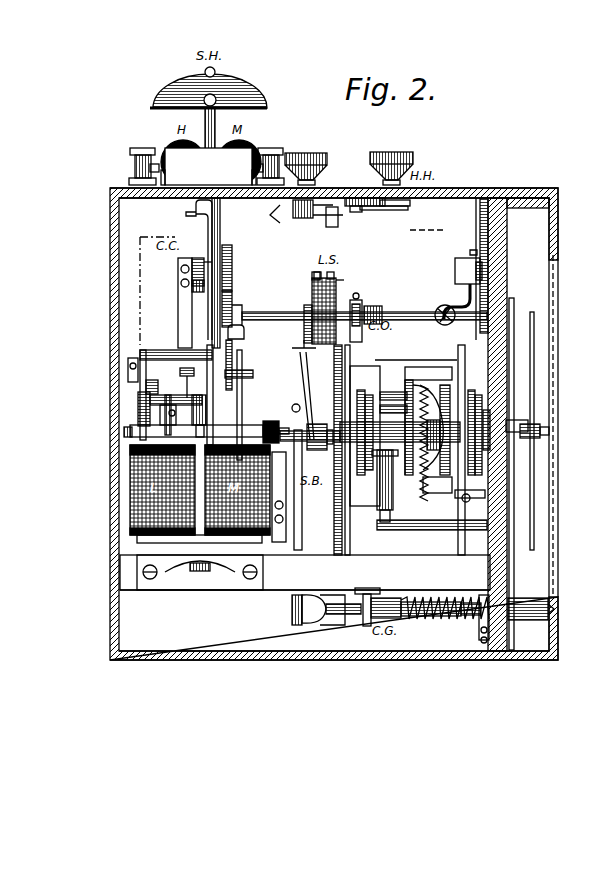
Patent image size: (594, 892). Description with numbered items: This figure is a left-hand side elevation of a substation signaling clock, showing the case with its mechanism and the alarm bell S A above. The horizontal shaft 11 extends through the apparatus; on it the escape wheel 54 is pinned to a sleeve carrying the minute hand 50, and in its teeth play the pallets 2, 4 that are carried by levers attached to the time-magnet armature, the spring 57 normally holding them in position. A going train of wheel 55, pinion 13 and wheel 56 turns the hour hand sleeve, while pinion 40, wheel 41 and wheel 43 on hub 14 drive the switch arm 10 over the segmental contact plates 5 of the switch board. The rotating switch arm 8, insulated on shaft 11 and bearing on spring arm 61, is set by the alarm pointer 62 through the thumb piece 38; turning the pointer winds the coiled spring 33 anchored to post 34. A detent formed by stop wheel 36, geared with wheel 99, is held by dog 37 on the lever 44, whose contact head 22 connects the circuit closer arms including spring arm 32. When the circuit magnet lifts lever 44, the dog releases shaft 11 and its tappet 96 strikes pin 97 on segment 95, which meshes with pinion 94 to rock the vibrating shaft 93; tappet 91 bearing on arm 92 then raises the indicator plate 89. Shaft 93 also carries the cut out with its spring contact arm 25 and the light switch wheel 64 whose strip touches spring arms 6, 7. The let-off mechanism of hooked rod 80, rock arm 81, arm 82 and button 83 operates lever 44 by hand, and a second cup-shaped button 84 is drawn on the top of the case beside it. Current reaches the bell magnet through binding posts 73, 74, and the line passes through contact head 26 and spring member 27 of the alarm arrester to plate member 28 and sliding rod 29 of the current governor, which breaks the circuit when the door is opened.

The pallet 2 is at (440, 386).
The pallet 4 is at (140, 700).
The segmental metal contact plate 5 is at (475, 700).
The spring arm 6 is at (270, 700).
The spring arm 7 is at (338, 276).
The rotating switch arm 8 is at (306, 390).
The switch arm 10 is at (330, 445).
The shaft 11 is at (130, 431).
The pinion 13 is at (476, 466).
The hub 14 is at (322, 424).
The contact head 22 is at (180, 373).
The spring contact arm 25 is at (358, 300).
The contact head 26 is at (352, 205).
The spring member 27 is at (395, 210).
The plate member 28 is at (292, 606).
The sliding spring rod member 29 is at (564, 608).
The spring arm 32 is at (184, 313).
The coiled spring 33 is at (140, 416).
The post 34 is at (138, 366).
The stop wheel 36 is at (177, 415).
The dog 37 is at (184, 395).
The thumb piece 38 is at (542, 432).
The pinion 40 is at (360, 424).
The wheel 41 is at (368, 470).
The wheel 43 is at (375, 486).
The trip arm or lever 44 is at (205, 410).
The minute hand 50 is at (512, 408).
The escape wheel 54 is at (446, 400).
The wheel 55 is at (470, 449).
The wheel 56 is at (475, 395).
The spring 57 is at (420, 494).
The spring arm 61 is at (296, 450).
The alarm pointer 62 is at (532, 366).
The wheel 64 is at (312, 298).
The binding post 73 is at (140, 150).
The binding post 74 is at (276, 150).
The hooked rod 80 is at (205, 244).
The rock arm 81 is at (196, 214).
The arm 82 is at (300, 210).
The button 83 is at (316, 155).
The cup 84 is at (408, 156).
The indicator plate 89 is at (480, 221).
The tappet 91 is at (470, 255).
The arm 92 is at (458, 264).
The vibrating shaft 93 is at (290, 312).
The pinion 94 is at (233, 310).
The segment 95 is at (232, 272).
The tappet 96 is at (243, 358).
The pin 97 is at (252, 376).
The wheel 99 is at (150, 382).